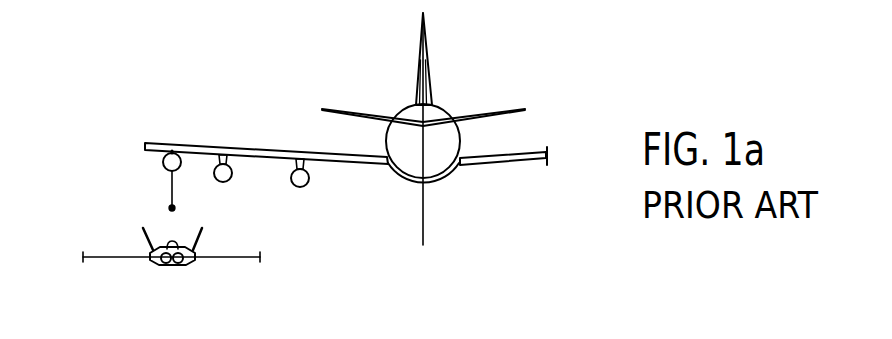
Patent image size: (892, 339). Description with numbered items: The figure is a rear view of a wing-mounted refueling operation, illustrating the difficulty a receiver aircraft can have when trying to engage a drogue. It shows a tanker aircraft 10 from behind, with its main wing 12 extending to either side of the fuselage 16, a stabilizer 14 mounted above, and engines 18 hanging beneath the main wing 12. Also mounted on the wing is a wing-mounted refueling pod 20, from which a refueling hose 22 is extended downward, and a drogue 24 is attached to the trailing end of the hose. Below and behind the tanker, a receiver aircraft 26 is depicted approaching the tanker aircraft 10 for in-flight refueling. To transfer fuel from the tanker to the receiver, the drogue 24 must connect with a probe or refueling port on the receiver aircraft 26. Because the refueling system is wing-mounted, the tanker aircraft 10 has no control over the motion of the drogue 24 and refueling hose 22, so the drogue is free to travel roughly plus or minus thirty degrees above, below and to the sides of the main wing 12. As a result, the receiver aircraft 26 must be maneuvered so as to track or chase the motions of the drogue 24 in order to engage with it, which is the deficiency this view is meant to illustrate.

The tanker aircraft 10 is at (372, 68).
The main wing 12 is at (260, 147).
The stabilizer 14 is at (493, 109).
The fuselage 16 is at (433, 107).
The engines 18 is at (231, 181).
The wing-mounted refueling pod 20 is at (163, 162).
The refueling hose 22 is at (172, 192).
The drogue 24 is at (171, 209).
The receiver aircraft 26 is at (130, 258).